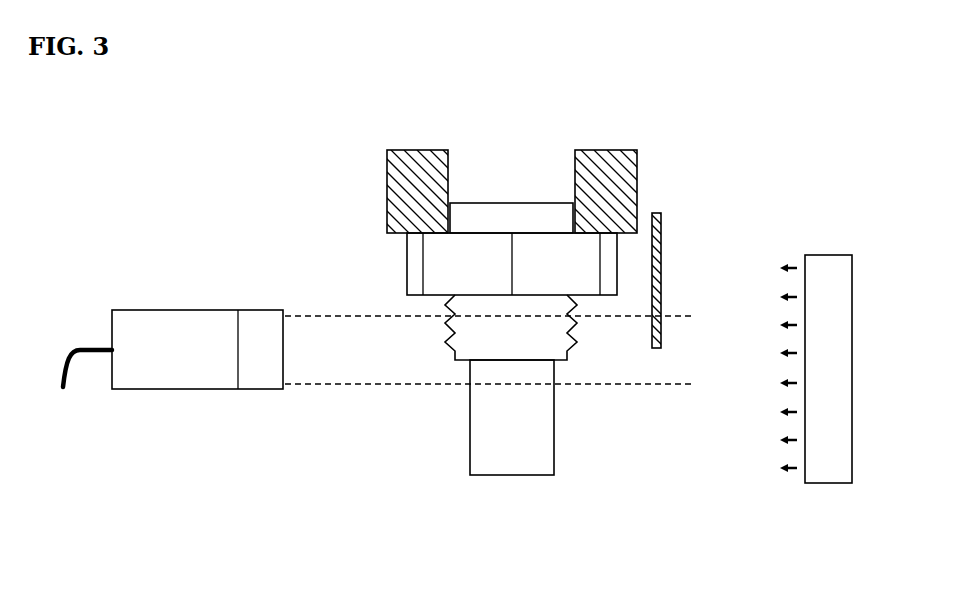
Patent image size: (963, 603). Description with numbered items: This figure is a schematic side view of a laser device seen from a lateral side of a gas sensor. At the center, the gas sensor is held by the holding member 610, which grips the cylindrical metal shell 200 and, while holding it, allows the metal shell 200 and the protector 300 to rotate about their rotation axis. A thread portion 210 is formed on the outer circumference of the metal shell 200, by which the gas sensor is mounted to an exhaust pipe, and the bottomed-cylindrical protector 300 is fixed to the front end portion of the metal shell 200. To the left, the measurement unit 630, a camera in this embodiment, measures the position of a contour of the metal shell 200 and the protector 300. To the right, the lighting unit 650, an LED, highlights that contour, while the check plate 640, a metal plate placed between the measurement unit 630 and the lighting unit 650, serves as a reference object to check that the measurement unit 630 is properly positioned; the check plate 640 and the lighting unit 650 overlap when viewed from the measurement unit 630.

The holding member 610 is at (448, 172).
The metal shell 200 is at (404, 271).
The thread portion 210 is at (576, 344).
The protector 300 is at (561, 439).
The measurement unit 630 is at (176, 310).
The check plate 640 is at (663, 214).
The lighting unit 650 is at (830, 255).